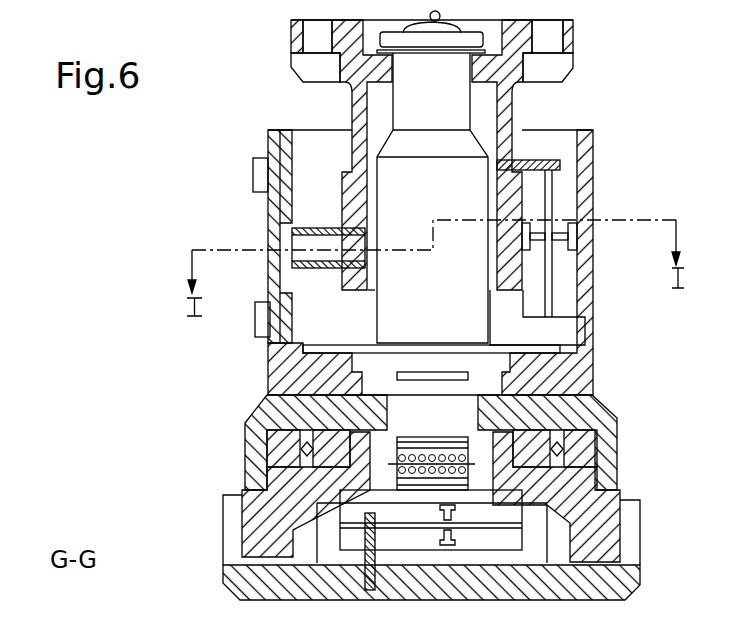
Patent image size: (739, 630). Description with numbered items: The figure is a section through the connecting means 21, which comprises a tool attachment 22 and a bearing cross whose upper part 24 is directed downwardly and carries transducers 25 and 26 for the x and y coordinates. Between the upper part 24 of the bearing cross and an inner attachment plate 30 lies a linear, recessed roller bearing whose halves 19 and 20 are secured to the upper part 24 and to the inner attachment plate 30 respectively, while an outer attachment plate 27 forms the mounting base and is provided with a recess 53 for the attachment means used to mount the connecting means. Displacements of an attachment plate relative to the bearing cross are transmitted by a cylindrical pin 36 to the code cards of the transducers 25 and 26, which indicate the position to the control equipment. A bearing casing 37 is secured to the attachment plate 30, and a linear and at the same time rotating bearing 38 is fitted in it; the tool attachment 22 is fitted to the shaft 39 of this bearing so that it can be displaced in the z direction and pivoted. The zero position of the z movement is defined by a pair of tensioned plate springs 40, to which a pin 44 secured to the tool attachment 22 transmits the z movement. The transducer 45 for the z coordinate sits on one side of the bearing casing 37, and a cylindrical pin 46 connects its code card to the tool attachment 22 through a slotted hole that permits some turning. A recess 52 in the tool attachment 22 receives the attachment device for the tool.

The roller bearing half 19 is at (283, 460).
The roller bearing half 20 is at (285, 443).
The connecting means 21 is at (209, 202).
The tool attachment 22 is at (573, 47).
The upper part of the bearing cross 24 is at (273, 505).
The transducer 25 is at (512, 540).
The transducer 26 is at (480, 473).
The outer attachment plate 27 is at (248, 583).
The inner attachment plate 30 is at (585, 413).
The cylindrical pin 36 is at (367, 543).
The bearing casing 37 is at (277, 325).
The linear and rotating bearing 38 is at (470, 197).
The shaft 39 is at (438, 20).
The plate springs 40 is at (307, 229).
The pin 44 is at (307, 242).
The transducer 45 is at (565, 276).
The cylindrical pin 46 is at (533, 160).
The recess 52 is at (318, 33).
The recess 53 is at (552, 597).